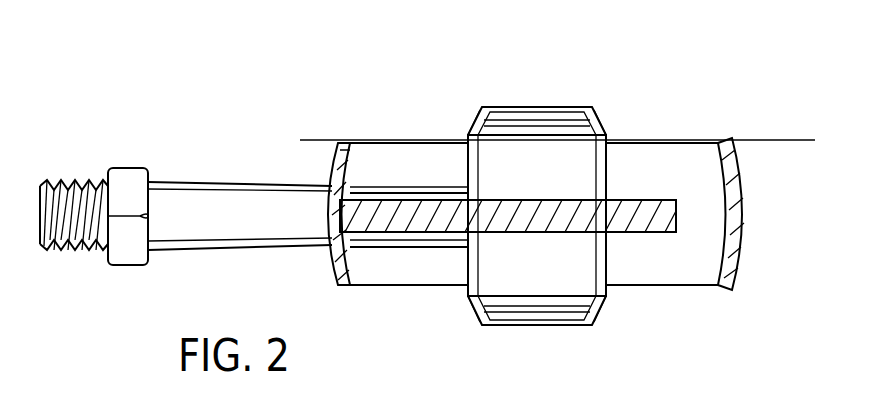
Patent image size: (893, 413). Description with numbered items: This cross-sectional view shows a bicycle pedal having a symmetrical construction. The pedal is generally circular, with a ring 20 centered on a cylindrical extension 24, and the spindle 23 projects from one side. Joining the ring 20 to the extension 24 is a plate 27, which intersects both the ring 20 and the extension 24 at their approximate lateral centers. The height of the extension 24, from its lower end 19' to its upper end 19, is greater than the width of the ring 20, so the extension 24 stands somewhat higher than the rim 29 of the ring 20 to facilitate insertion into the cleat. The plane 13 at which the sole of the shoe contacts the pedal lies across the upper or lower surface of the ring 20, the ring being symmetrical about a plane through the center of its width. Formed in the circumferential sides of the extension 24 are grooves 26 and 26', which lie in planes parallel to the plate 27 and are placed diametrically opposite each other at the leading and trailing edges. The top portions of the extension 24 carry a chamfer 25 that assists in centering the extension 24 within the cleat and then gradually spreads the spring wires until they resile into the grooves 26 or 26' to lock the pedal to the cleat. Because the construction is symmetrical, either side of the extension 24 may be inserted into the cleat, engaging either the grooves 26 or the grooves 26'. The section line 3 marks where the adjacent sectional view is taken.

The section line 3- 3 is at (535, 100).
The plane 13 is at (760, 140).
The top of extension 19 is at (537, 90).
The bottom of extension 19' is at (533, 336).
The ring 20 is at (340, 172).
The spindle 23 is at (204, 188).
The cylindrical extension 24 is at (480, 158).
The chamfer 25 is at (472, 118).
The groove 26 is at (624, 108).
The groove 26' is at (642, 313).
The plate 27 is at (650, 200).
The rim 29 is at (727, 140).